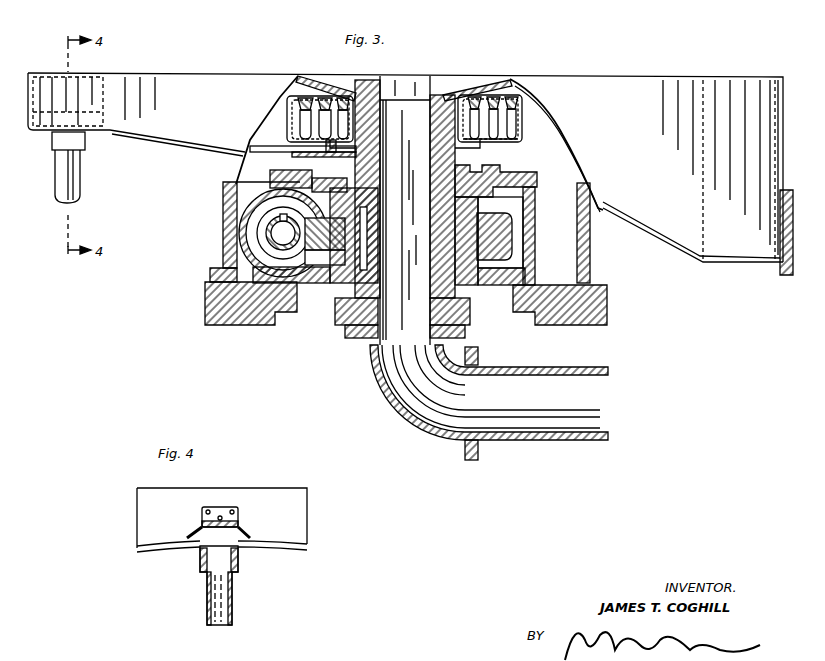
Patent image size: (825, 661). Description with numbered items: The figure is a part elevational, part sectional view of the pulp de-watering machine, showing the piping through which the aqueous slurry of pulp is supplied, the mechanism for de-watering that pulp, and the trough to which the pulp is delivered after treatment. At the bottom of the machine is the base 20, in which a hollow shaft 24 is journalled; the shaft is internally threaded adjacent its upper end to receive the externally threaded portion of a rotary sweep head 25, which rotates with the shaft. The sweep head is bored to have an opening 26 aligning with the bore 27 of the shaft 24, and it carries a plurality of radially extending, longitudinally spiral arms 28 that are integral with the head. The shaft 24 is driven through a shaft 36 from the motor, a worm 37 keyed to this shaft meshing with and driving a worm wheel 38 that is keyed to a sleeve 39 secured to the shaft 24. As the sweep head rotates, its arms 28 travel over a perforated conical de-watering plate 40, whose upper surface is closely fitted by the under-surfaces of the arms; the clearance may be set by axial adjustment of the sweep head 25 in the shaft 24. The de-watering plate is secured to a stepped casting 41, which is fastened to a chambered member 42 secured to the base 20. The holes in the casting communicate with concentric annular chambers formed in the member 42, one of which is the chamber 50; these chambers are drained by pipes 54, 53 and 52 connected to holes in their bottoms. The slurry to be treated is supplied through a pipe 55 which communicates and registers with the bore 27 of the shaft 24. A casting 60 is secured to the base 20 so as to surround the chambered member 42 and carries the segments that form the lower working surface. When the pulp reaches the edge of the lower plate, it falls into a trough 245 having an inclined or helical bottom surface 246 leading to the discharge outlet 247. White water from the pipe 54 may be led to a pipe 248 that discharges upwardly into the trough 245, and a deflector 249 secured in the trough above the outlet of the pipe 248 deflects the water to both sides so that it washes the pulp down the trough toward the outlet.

In FIG. 3, the base 20 is at (225, 236).
In FIG. 3, the hollow shaft 24 is at (437, 190).
In FIG. 3, the rotary sweep head 25 is at (380, 92).
In FIG. 3, the opening 26 is at (415, 90).
In FIG. 3, the bore 27 is at (365, 276).
In FIG. 3, the arms 28 is at (457, 90).
In FIG. 3, the shaft 36 is at (294, 230).
In FIG. 3, the worm 37 is at (285, 222).
In FIG. 3, the worm wheel 38 is at (512, 236).
In FIG. 3, the sleeve 39 is at (336, 222).
In FIG. 3, the perforated conical de-watering plate 40 is at (489, 86).
In FIG. 3, the stepped casting 41 is at (500, 106).
In FIG. 3, the chambered member 42 is at (520, 130).
In FIG. 3, the annular chamber 50 is at (300, 120).
In FIG. 3, the pipe 52 is at (257, 152).
In FIG. 3, the pipe 53 is at (328, 150).
In FIG. 3, the pipe 54 is at (331, 152).
In FIG. 3, the pipe 55 is at (545, 441).
In FIG. 3, the casting 60 is at (299, 110).
In FIG. 3, the trough 245 is at (620, 92).
In FIG. 4, the trough 245 is at (265, 500).
In FIG. 3, the inclined bottom surface 246 is at (663, 238).
In FIG. 4, the inclined bottom surface 246 is at (285, 551).
In FIG. 3, the discharge outlet 247 is at (789, 258).
In FIG. 3, the pipe 248 is at (72, 174).
In FIG. 4, the pipe 248 is at (235, 604).
In FIG. 3, the deflector 249 is at (80, 106).
In FIG. 4, the deflector 249 is at (202, 515).